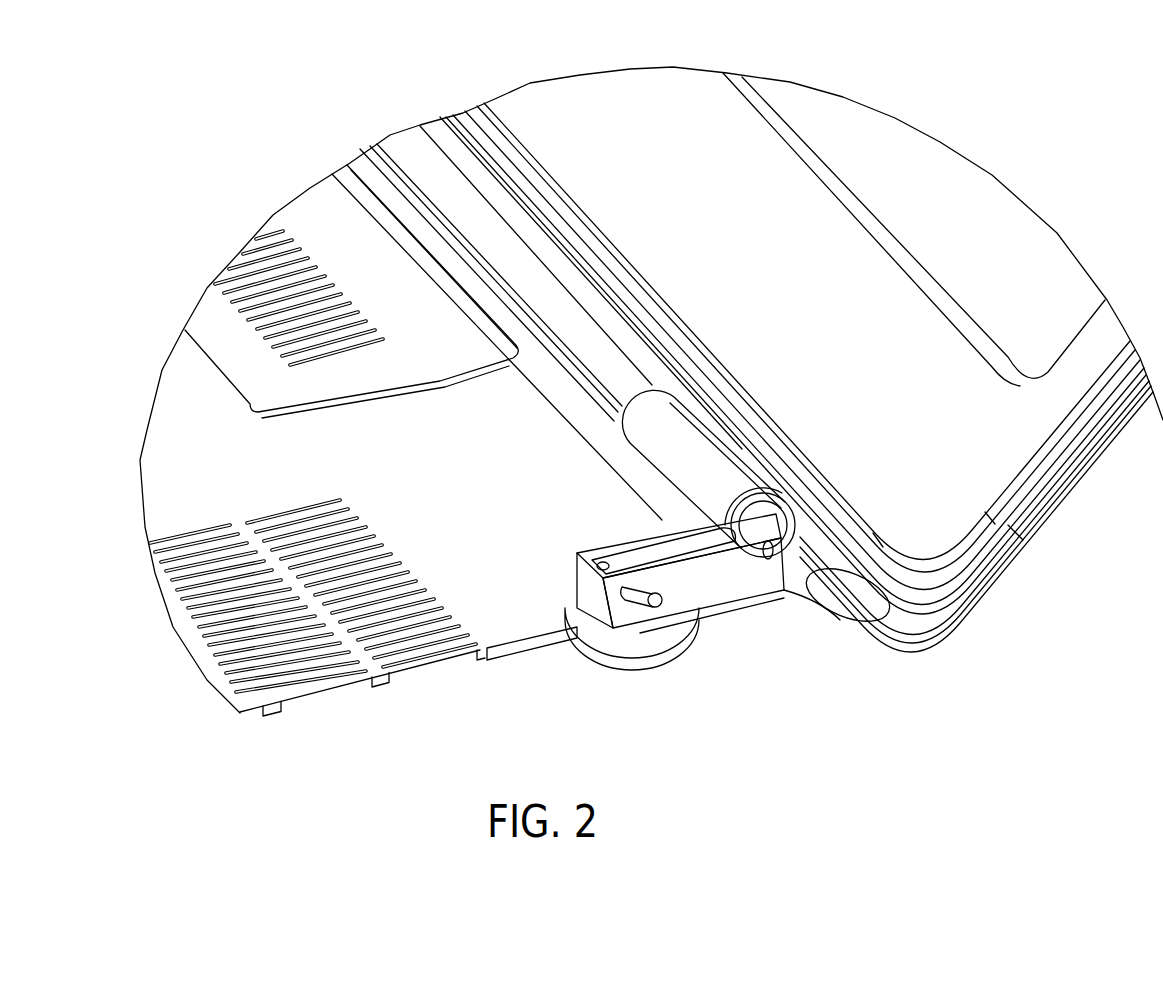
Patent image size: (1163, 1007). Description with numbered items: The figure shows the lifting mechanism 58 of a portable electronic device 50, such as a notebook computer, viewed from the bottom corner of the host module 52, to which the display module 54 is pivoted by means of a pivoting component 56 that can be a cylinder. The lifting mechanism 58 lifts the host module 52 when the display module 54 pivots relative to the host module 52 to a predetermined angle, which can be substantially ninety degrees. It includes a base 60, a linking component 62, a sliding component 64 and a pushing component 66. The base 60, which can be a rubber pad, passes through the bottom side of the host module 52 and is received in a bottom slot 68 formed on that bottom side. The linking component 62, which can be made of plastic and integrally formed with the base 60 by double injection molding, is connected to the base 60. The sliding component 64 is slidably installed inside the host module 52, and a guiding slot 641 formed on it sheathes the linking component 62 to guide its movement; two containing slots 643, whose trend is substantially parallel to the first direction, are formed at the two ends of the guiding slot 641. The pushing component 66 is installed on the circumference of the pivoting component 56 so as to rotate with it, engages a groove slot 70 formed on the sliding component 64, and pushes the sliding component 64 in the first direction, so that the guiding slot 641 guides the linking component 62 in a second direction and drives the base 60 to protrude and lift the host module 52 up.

The portable electronic device 50 is at (1060, 142).
The host module 52 is at (411, 661).
The display module 54 is at (1007, 440).
The pivoting component 56 is at (758, 497).
The lifting mechanism 58 is at (760, 620).
The base 60 is at (645, 653).
The linking component 62 is at (613, 560).
The sliding component 64 is at (706, 598).
The guiding slot 641 is at (635, 606).
The containing slot 643 is at (665, 607).
The pushing component 66 is at (802, 566).
The bottom slot 68 is at (585, 654).
The groove slot 70 is at (782, 553).